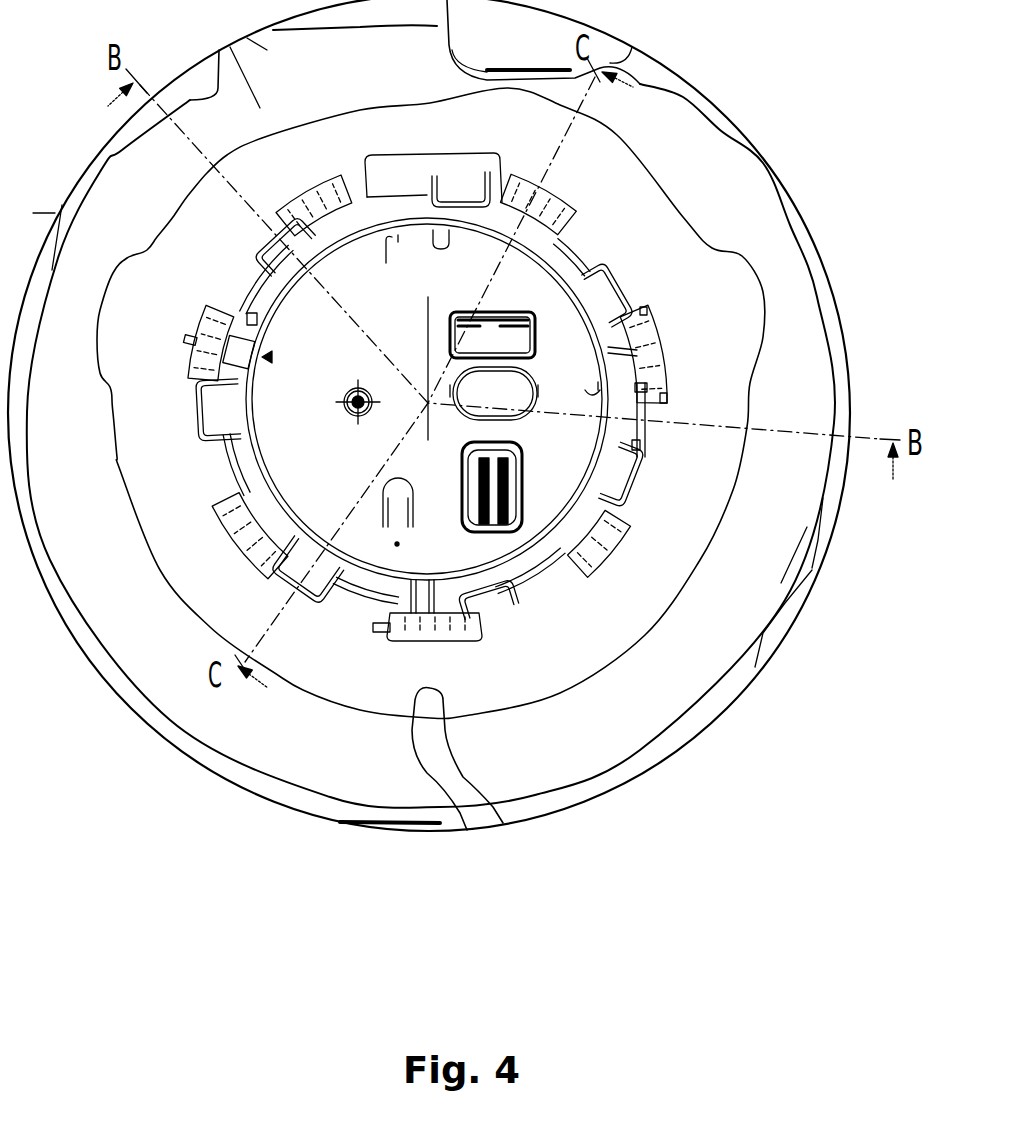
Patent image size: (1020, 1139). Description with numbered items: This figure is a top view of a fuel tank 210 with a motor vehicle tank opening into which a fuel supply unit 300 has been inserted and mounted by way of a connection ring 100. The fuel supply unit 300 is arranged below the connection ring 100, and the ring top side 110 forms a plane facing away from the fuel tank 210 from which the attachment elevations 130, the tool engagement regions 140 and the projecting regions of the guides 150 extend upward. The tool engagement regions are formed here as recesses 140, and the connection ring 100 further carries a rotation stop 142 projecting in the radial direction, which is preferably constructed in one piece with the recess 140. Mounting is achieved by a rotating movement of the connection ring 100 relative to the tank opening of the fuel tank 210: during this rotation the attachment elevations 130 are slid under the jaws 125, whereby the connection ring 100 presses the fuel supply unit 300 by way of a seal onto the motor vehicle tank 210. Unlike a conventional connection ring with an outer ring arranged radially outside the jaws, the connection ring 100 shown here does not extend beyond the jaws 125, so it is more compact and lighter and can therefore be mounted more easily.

The connection ring 100 is at (253, 296).
The ring top side 110 is at (545, 557).
The jaws 125 is at (645, 330).
The attachment elevations 130 is at (590, 552).
The tool engagement regions 140 is at (645, 490).
The rotation stop 142 is at (643, 300).
The guides 150 is at (655, 420).
The fuel tank 210 is at (186, 484).
The fuel supply unit 300 is at (338, 463).